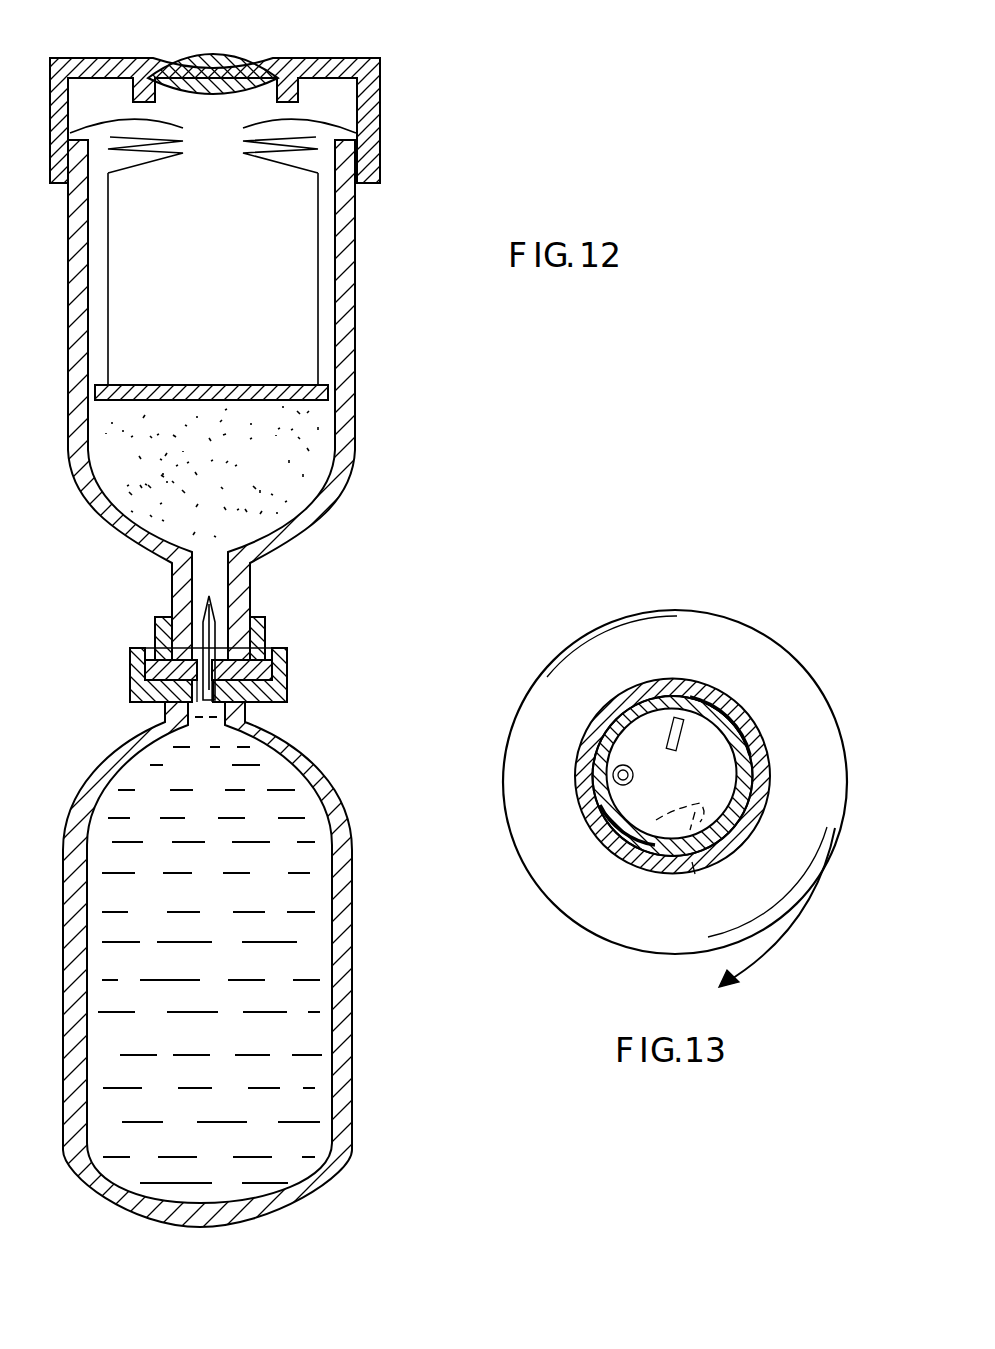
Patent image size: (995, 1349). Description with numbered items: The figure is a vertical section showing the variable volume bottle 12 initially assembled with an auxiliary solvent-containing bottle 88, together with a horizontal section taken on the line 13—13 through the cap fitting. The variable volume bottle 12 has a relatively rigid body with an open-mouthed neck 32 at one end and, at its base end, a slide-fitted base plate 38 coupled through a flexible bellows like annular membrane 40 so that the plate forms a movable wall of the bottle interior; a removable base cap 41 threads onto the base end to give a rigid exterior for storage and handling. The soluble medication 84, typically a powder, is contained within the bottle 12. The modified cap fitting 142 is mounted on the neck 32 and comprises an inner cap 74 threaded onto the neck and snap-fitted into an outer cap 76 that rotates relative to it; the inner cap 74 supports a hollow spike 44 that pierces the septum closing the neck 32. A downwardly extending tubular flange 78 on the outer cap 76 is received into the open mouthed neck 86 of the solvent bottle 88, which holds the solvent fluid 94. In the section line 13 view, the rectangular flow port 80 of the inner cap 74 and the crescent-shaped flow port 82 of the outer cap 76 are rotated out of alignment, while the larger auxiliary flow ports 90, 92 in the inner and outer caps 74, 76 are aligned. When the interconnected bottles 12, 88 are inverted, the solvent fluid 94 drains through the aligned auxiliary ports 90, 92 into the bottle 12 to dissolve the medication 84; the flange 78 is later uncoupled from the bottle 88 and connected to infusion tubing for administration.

In FIG. 12, the variable volume bottle 12 is at (88, 512).
In FIG. 12, the section line 13— 13 is at (115, 669).
In FIG. 12, the neck 32 is at (242, 594).
In FIG. 12, the base plate 38 is at (196, 385).
In FIG. 12, the bellows like annular membrane 40 is at (305, 133).
In FIG. 12, the base cap 41 is at (60, 58).
In FIG. 12, the hollow spike 44 is at (203, 592).
In FIG. 12, the inner cap 74 is at (156, 622).
In FIG. 13, the inner cap 74 is at (748, 763).
In FIG. 12, the outer cap 76 is at (288, 700).
In FIG. 13, the outer cap 76 is at (757, 822).
In FIG. 12, the tubular flange 78 is at (194, 720).
In FIG. 13, the flow port 80 is at (684, 728).
In FIG. 13, the flow port 82 is at (694, 876).
In FIG. 12, the soluble medication 84 is at (313, 442).
In FIG. 12, the open mouthed neck 86 is at (262, 722).
In FIG. 12, the solvent-containing bottle 88 is at (352, 1024).
In FIG. 13, the solvent-containing bottle 88 is at (798, 897).
In FIG. 13, the auxiliary flow port 90 is at (612, 776).
In FIG. 13, the auxiliary flow port 92 is at (615, 798).
In FIG. 12, the solvent fluid 94 is at (117, 1048).
In FIG. 12, the modified cap fitting 142 is at (128, 705).